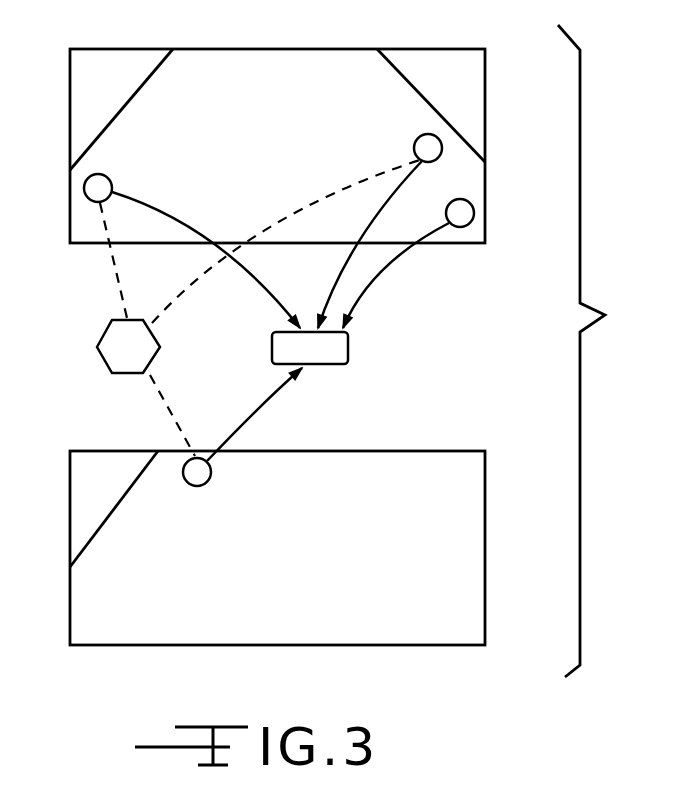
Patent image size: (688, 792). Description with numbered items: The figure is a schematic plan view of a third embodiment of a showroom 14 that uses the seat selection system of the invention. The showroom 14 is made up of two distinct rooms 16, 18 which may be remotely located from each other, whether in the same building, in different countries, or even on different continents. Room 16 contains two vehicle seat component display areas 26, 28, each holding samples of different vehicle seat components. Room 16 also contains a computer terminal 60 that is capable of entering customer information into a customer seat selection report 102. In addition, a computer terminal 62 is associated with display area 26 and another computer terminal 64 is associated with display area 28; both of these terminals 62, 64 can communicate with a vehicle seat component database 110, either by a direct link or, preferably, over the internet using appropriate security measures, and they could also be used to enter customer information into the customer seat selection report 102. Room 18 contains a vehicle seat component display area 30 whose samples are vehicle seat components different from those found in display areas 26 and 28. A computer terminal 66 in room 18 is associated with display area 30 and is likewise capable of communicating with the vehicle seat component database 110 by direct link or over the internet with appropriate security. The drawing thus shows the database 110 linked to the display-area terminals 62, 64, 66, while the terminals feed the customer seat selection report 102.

The showroom 14 is at (600, 351).
The room 16 is at (264, 92).
The room 18 is at (390, 507).
The vehicle seat component display area 26 is at (86, 92).
The vehicle seat component display area 28 is at (427, 90).
The vehicle seat component display area 30 is at (83, 488).
The computer terminal 60 is at (470, 203).
The computer terminal 62 is at (110, 178).
The computer terminal 64 is at (418, 138).
The computer terminal 66 is at (200, 487).
The customer seat selection report 102 is at (348, 345).
The vehicle seat component database 110 is at (95, 345).